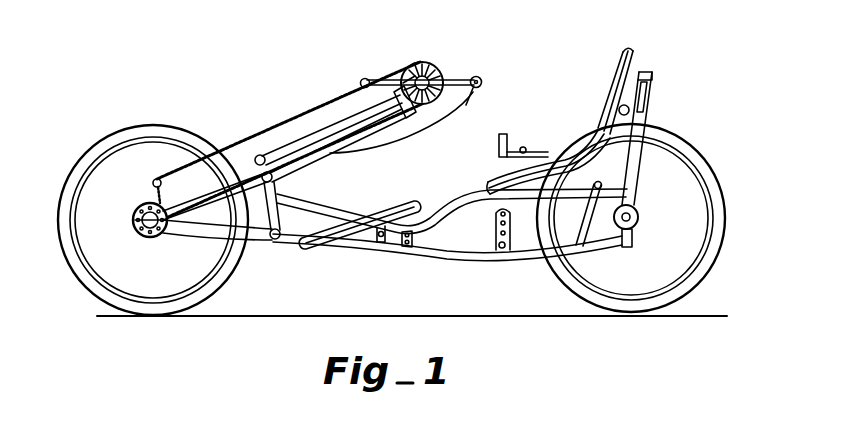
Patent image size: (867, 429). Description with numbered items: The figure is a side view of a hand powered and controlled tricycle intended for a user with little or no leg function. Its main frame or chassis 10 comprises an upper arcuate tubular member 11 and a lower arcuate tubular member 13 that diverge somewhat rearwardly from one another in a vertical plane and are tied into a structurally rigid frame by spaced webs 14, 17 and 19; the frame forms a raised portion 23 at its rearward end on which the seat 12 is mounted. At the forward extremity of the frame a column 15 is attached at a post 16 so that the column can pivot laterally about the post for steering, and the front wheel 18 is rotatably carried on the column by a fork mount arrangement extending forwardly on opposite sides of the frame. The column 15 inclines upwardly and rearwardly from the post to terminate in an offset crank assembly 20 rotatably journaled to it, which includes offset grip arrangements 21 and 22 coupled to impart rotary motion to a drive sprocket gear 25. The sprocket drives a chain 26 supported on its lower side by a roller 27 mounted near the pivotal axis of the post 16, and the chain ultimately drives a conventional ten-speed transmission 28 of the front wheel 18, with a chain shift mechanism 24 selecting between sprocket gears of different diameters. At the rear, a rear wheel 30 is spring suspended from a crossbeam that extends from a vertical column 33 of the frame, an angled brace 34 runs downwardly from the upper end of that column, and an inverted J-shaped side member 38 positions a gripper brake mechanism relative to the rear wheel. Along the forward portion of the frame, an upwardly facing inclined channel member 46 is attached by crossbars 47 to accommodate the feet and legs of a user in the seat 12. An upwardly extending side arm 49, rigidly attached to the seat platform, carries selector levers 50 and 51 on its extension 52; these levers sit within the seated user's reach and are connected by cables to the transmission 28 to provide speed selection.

The main frame 10 is at (442, 258).
The upper arcuate tubular member 11 is at (456, 224).
The seat 12 is at (626, 48).
The lower arcuate tubular member 13 is at (470, 262).
The web 14 is at (405, 246).
The column 15 is at (315, 140).
The post 16 is at (288, 190).
The web 17 is at (505, 255).
The front wheel 18 is at (106, 142).
The web 19 is at (586, 228).
The offset crank assembly 20 is at (447, 22).
The offset grip arrangement 21 is at (364, 80).
The offset grip arrangement 22 is at (478, 80).
The raised portion 23 is at (603, 187).
The chain shift mechanism 24 is at (403, 120).
The drive sprocket gear 25 is at (440, 68).
The chain 26 is at (303, 113).
The roller 27 is at (258, 157).
The 10-speed transmission 28 is at (136, 216).
The rear wheel 30 is at (683, 150).
The vertical column 33 is at (650, 70).
The angled brace 34 is at (652, 98).
The inverted J-shaped side member 38 is at (634, 240).
The channel member 46 is at (298, 250).
The crossbar 47 is at (378, 241).
The side arm 49 is at (577, 133).
The selector lever 50 is at (530, 100).
The selector lever 51 is at (500, 144).
The extension 52 is at (525, 148).